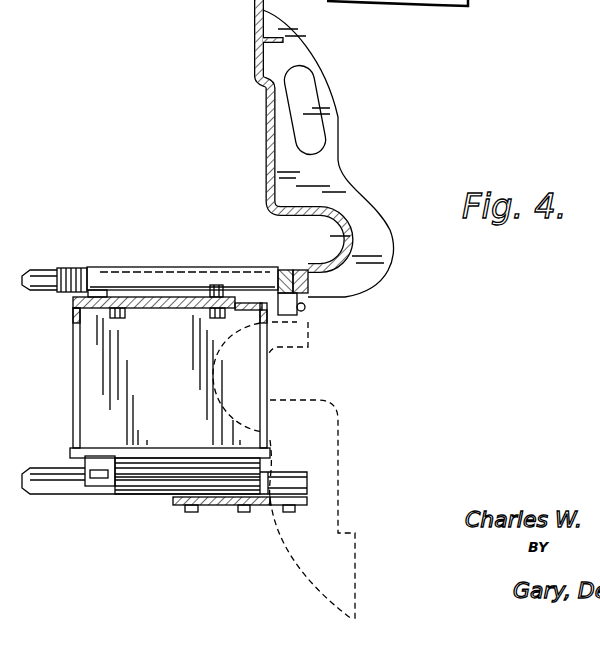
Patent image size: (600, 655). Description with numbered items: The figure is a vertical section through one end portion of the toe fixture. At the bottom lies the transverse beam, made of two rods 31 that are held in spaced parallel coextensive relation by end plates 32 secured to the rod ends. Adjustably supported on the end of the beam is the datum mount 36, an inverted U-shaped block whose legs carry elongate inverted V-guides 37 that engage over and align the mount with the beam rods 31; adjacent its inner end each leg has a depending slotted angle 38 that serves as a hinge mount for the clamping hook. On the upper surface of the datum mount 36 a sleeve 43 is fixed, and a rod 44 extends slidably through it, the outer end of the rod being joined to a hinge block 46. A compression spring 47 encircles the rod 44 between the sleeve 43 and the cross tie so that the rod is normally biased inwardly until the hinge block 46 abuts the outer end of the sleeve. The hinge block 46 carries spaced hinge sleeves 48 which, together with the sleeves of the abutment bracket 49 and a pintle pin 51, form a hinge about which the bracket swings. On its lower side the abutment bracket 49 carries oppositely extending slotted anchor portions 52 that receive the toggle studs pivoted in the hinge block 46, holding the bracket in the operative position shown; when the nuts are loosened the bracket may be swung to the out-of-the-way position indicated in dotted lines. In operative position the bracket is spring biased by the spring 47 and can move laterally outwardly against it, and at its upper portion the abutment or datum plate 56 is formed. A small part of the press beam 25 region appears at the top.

The frame member 25 is at (415, 7).
The datum plate 56 is at (255, 65).
The abutment bracket 49 is at (318, 170).
The hinge block 46 is at (290, 270).
The anchor portions 52 is at (303, 270).
The hinge sleeves 48 is at (306, 305).
The pintle pin 51 is at (302, 315).
The rod 44 is at (40, 268).
The compression spring 47 is at (72, 268).
The sleeve 43 is at (155, 268).
The datum mount 36 is at (150, 312).
The slotted angle 38 is at (105, 458).
The inverted V-guide 37 is at (173, 458).
The rod 31 is at (55, 492).
The end plate 32 is at (222, 500).